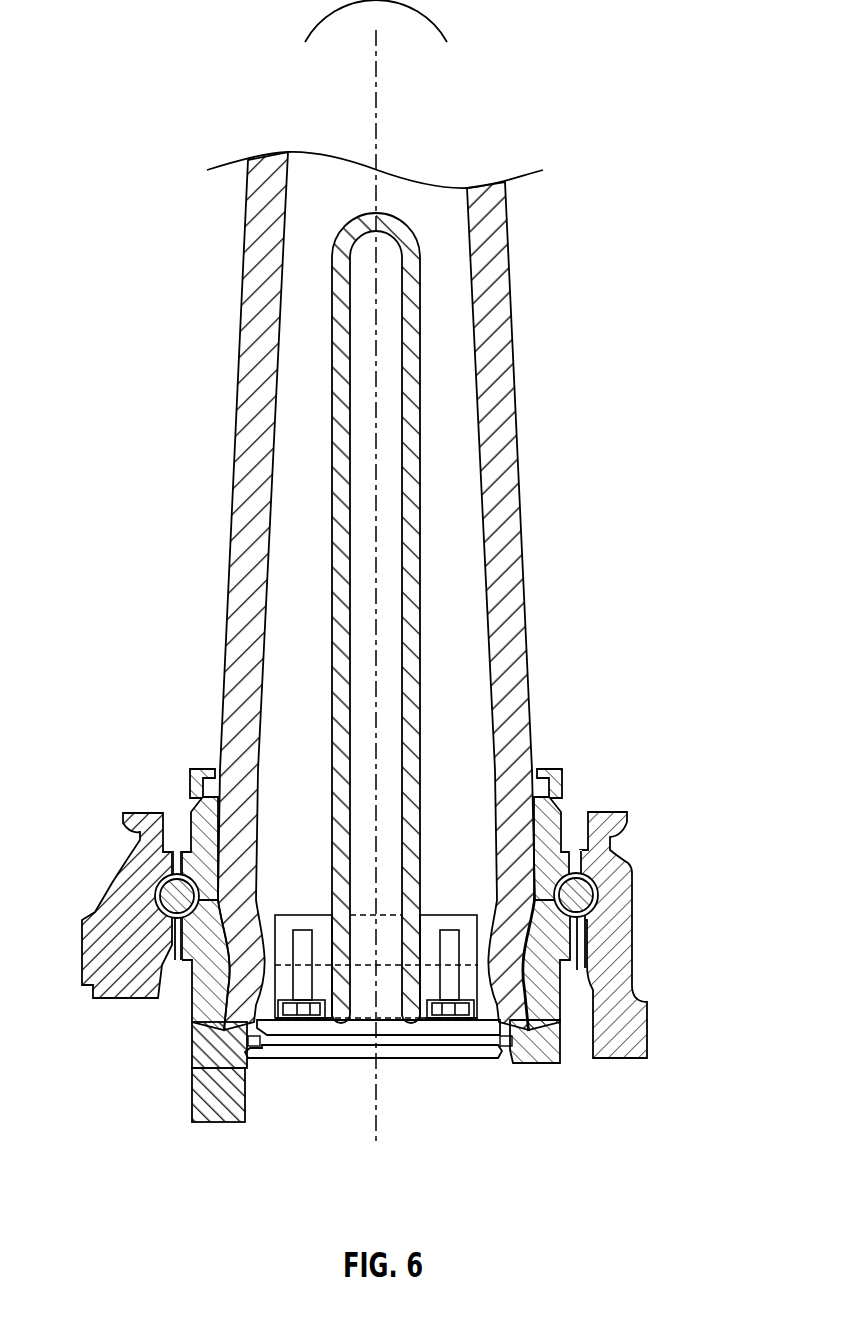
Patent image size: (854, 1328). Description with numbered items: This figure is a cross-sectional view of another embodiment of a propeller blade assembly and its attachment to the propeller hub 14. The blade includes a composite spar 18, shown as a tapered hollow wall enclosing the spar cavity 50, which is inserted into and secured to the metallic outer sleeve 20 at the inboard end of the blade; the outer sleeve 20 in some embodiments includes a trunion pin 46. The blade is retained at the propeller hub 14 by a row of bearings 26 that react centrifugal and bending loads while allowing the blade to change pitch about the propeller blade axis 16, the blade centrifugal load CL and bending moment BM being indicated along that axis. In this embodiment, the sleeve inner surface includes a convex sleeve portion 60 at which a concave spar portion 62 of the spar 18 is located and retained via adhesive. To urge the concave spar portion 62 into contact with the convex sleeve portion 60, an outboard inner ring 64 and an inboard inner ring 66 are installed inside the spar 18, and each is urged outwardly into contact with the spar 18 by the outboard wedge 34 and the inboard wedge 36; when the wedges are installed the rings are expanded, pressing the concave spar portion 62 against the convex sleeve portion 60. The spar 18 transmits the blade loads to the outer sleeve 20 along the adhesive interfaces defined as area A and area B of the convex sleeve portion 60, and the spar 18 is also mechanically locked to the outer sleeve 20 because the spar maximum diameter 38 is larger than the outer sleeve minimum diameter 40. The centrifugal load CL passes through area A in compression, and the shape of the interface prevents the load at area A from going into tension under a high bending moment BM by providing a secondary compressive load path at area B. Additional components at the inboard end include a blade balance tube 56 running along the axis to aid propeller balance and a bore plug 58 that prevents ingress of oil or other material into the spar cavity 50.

The propeller hub 14 is at (620, 1063).
The propeller blade axis 16 is at (376, 95).
The spar 18 is at (524, 592).
The outer sleeve 20 is at (548, 1065).
The bearings 26 is at (160, 895).
The outboard wedge 34 is at (460, 914).
The inboard wedge 36 is at (535, 978).
The spar maximum diameter 38 is at (237, 1022).
The outer sleeve minimum diameter 40 is at (225, 970).
The trunion pin 46 is at (247, 1103).
The spar cavity 50 is at (300, 869).
The blade balance tube 56 is at (421, 398).
The bore plug 58 is at (317, 1046).
The convex sleeve portion 60 is at (182, 952).
The concave spar portion 62 is at (192, 1072).
The outboard inner ring 64 is at (590, 920).
The inboard inner ring 66 is at (605, 1058).
The area A is at (525, 975).
The area B is at (600, 882).
The centrifugal load CL is at (398, 30).
The bending moment BM is at (398, 22).